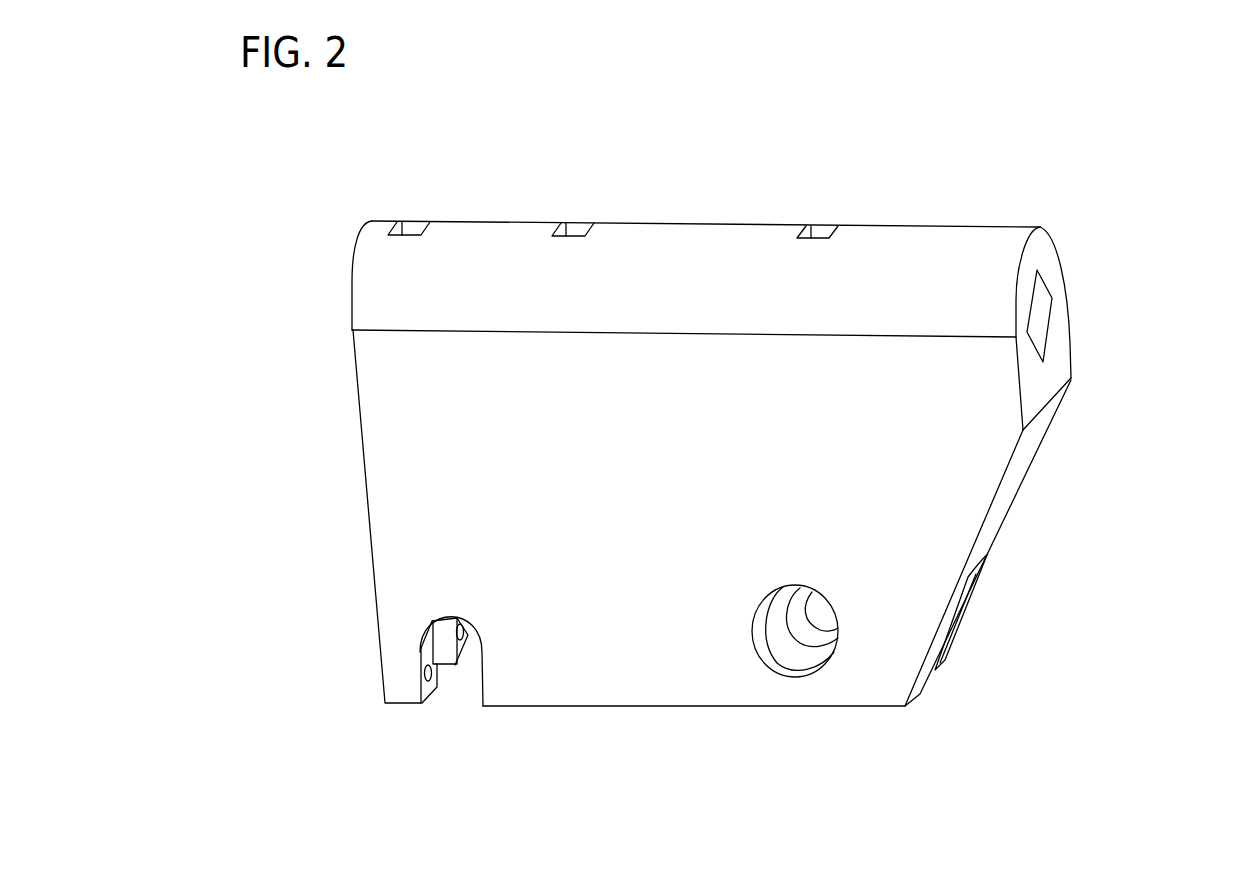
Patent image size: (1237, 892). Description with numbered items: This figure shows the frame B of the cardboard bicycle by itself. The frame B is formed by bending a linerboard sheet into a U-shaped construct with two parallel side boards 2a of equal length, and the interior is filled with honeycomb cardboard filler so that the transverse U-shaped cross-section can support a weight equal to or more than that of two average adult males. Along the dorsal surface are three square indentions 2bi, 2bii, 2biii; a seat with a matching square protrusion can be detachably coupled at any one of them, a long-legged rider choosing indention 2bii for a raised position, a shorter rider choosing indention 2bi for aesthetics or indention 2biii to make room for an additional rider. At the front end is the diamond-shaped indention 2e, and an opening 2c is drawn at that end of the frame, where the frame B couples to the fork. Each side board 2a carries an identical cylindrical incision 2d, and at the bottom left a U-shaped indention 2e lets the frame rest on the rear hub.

The frame B is at (294, 252).
The side board 2a is at (400, 523).
The square indention 2bi is at (418, 220).
The square indention 2bii is at (573, 221).
The square indention 2biii is at (823, 225).
The end opening 2c is at (1032, 303).
The cylindrical incision 2d is at (805, 635).
The U-shaped indention 2e is at (453, 682).